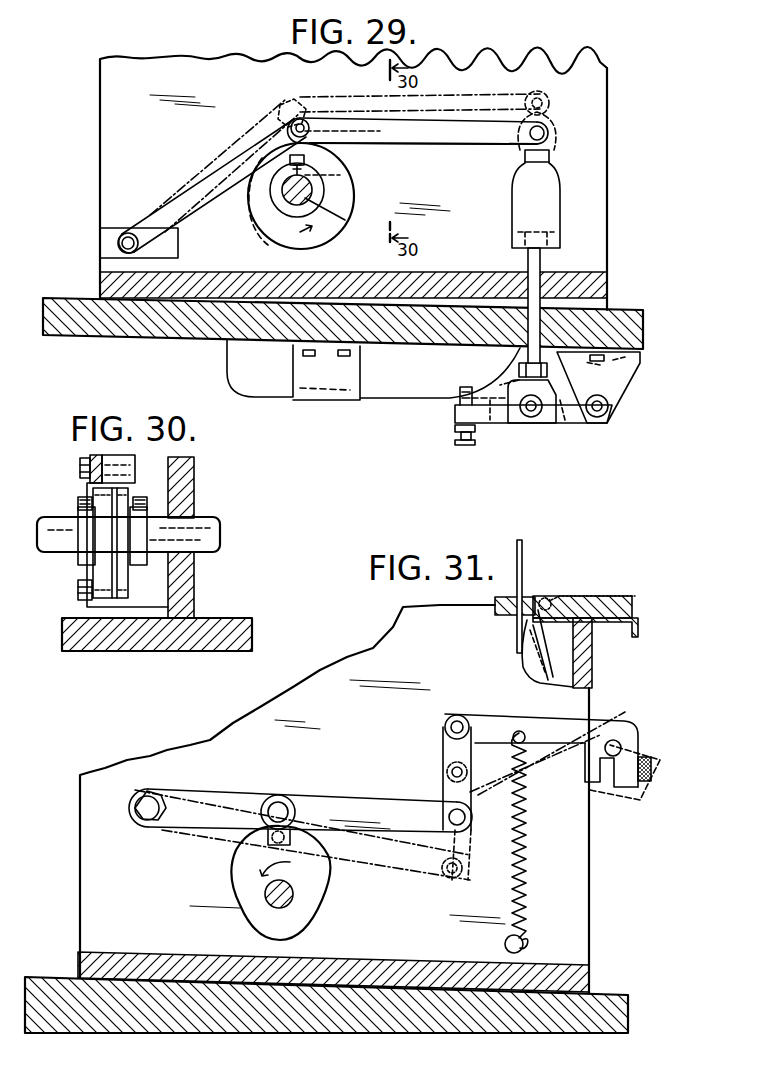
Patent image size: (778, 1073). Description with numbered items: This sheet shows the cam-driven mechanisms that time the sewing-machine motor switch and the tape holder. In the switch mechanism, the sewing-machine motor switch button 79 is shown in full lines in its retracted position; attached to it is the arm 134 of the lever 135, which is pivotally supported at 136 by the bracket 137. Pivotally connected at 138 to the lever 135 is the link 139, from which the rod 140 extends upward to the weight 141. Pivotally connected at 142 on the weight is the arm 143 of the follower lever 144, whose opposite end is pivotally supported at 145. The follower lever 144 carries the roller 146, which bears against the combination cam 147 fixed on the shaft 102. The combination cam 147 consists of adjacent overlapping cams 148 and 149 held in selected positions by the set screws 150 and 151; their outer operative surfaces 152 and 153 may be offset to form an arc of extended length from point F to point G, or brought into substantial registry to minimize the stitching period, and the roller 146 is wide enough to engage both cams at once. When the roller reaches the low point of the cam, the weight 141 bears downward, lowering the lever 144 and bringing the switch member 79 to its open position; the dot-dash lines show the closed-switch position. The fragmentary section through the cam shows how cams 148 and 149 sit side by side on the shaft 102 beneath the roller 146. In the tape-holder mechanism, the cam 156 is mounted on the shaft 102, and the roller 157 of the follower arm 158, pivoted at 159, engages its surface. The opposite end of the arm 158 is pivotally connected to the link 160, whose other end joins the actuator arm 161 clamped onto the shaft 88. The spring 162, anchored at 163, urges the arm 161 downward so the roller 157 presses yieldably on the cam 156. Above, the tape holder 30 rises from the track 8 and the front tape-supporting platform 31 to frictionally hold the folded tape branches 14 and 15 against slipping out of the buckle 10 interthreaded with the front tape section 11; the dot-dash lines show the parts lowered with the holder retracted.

In FIG. 31, the track 8 is at (497, 615).
In FIG. 31, the buckle 10 is at (551, 593).
In FIG. 31, the front tape section 11 is at (591, 589).
In FIG. 31, the tape branch 14 is at (522, 553).
In FIG. 31, the tape branch 15 is at (512, 648).
In FIG. 31, the tape holder 30 is at (540, 672).
In FIG. 31, the front tape-supporting platform 31 is at (612, 622).
In FIG. 29, the sewing-machine motor switch button 79 is at (455, 402).
In FIG. 31, the shaft 88 is at (620, 745).
In FIG. 29, the shaft 102 is at (333, 222).
In FIG. 30, the shaft 102 is at (205, 526).
In FIG. 31, the shaft 102 is at (293, 896).
In FIG. 29, the arm 134 is at (487, 425).
In FIG. 29, the lever 135 is at (575, 423).
In FIG. 29, the pivot 136 is at (604, 415).
In FIG. 29, the bracket 137 is at (626, 380).
In FIG. 29, the pivotal connection 138 is at (537, 418).
In FIG. 29, the link 139 is at (540, 383).
In FIG. 29, the rod 140 is at (541, 276).
In FIG. 29, the weight 141 is at (556, 212).
In FIG. 29, the pivotal connection 142 is at (547, 133).
In FIG. 29, the arm 143 is at (477, 152).
In FIG. 29, the follower lever 144 is at (427, 152).
In FIG. 30, the follower lever 144 is at (80, 470).
In FIG. 29, the pivot 145 is at (125, 230).
In FIG. 30, the pivot 145 is at (78, 592).
In FIG. 29, the roller 146 is at (296, 116).
In FIG. 30, the roller 146 is at (132, 462).
In FIG. 29, the combination cam 147 is at (336, 160).
In FIG. 29, the cam 148 is at (248, 200).
In FIG. 30, the cam 148 is at (95, 568).
In FIG. 29, the cam 149 is at (323, 205).
In FIG. 30, the cam 149 is at (118, 580).
In FIG. 29, the set screw 150 is at (332, 176).
In FIG. 30, the set screw 150 is at (80, 502).
In FIG. 30, the set screw 151 is at (140, 506).
In FIG. 29, the operative surface 152 is at (266, 247).
In FIG. 29, the operative surface 153 is at (333, 238).
In FIG. 31, the cam 156 is at (240, 893).
In FIG. 31, the roller 157 is at (282, 795).
In FIG. 31, the follower arm 158 is at (364, 794).
In FIG. 31, the pivot 159 is at (150, 797).
In FIG. 31, the link 160 is at (443, 768).
In FIG. 31, the actuator arm 161 is at (552, 722).
In FIG. 31, the spring 162 is at (527, 868).
In FIG. 31, the anchor 163 is at (522, 936).
In FIG. 29, the point F is at (246, 228).
In FIG. 29, the point G is at (340, 192).